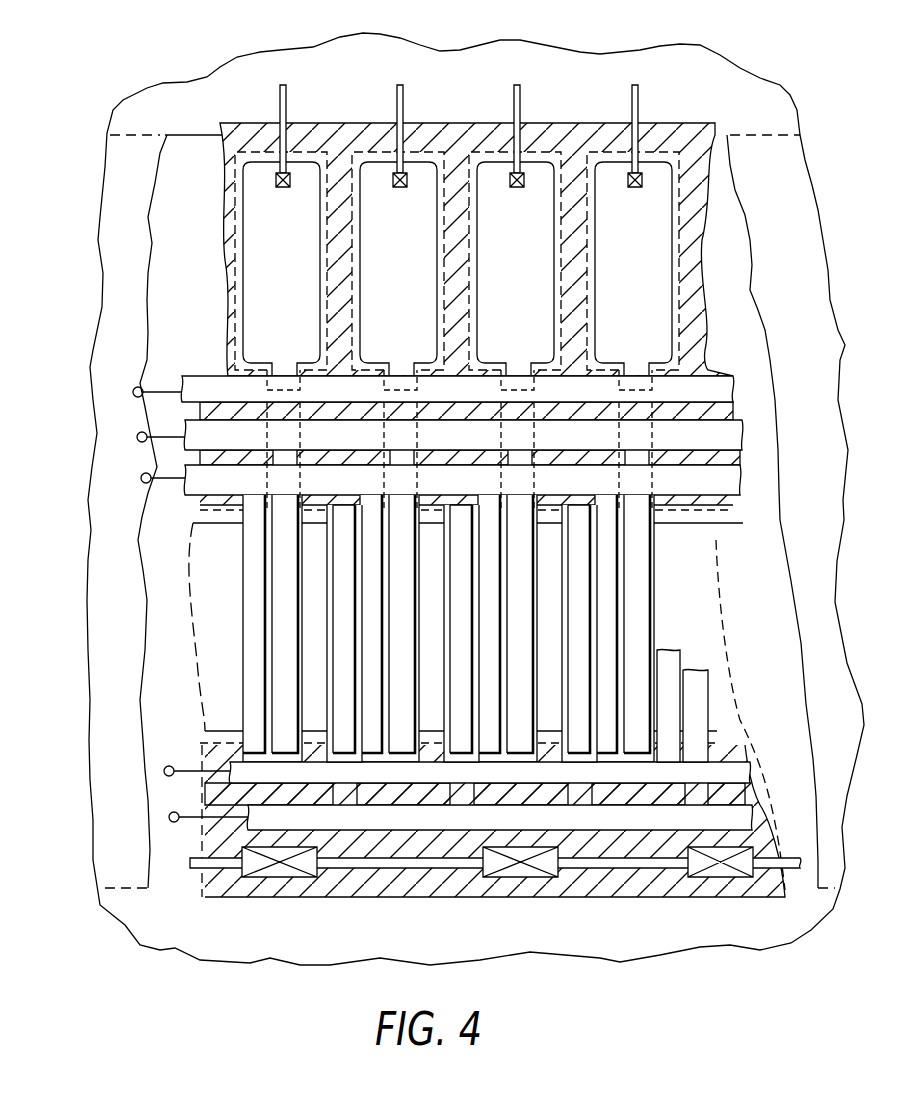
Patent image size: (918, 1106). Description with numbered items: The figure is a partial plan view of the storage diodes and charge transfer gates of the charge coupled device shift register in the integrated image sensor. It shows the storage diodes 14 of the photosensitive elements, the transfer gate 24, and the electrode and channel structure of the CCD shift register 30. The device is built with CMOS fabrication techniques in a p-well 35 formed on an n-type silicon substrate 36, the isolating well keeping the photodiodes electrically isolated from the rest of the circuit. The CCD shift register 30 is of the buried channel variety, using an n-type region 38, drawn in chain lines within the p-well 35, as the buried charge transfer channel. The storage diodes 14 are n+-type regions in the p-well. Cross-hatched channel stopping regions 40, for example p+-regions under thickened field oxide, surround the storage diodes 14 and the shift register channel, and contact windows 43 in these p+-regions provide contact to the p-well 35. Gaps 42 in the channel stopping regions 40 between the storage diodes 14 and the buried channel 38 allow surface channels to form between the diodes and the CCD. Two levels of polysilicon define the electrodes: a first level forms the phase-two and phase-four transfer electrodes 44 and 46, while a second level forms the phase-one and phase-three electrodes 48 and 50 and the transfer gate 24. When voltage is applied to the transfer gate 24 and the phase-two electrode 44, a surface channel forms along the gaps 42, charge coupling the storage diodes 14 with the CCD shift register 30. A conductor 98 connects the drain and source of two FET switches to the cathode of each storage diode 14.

The storage diode 14 is at (288, 271).
The transfer gate 24 is at (716, 400).
The CCD shift register 30 is at (176, 620).
The p-well 35 is at (742, 212).
The n-type silicon substrate 36 is at (620, 62).
The n-type region 38 is at (703, 606).
The channel stopping region 40 is at (578, 142).
The gap 42 is at (272, 412).
The contact window 43 is at (285, 880).
The phase-2 transfer electrode 44 is at (716, 444).
The phase-4 transfer electrode 46 is at (734, 829).
The phase-1 electrode 48 is at (716, 489).
The phase-3 electrode 50 is at (734, 784).
The conductor 98 is at (640, 110).